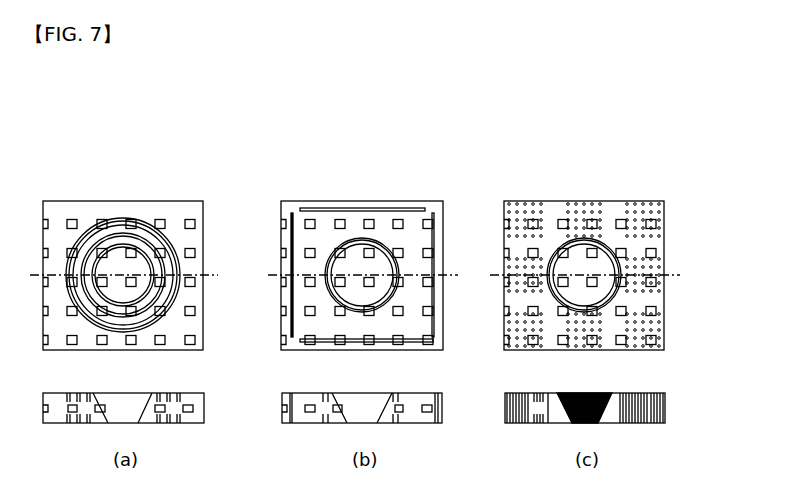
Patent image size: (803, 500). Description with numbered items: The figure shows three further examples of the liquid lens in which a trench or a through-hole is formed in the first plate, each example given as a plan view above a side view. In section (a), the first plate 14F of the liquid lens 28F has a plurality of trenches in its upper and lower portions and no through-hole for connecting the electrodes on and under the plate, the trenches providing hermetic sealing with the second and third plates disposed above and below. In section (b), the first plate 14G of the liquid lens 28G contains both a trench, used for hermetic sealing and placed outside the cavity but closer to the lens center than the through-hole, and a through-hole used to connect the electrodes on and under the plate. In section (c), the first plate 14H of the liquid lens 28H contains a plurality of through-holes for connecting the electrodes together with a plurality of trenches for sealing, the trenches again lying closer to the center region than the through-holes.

The liquid lens 28F is at (123, 201).
The liquid lens 28G is at (363, 201).
The liquid lens 28H is at (587, 201).
The first plate 14F is at (206, 410).
The first plate 14G is at (444, 410).
The first plate 14H is at (667, 410).